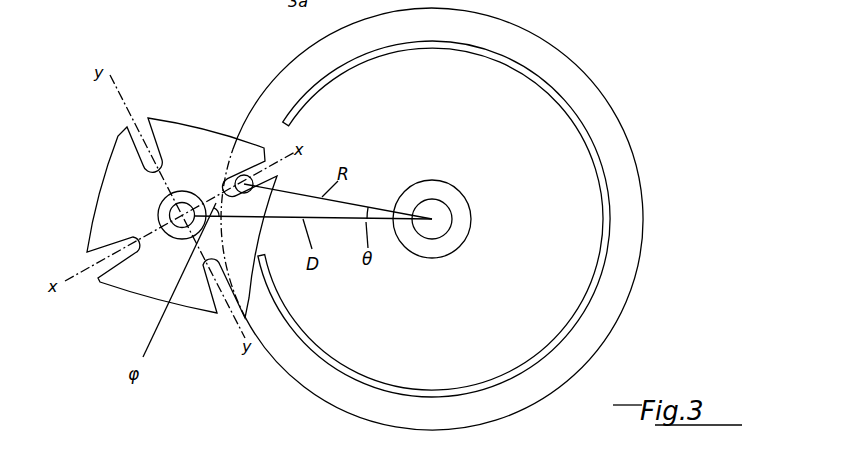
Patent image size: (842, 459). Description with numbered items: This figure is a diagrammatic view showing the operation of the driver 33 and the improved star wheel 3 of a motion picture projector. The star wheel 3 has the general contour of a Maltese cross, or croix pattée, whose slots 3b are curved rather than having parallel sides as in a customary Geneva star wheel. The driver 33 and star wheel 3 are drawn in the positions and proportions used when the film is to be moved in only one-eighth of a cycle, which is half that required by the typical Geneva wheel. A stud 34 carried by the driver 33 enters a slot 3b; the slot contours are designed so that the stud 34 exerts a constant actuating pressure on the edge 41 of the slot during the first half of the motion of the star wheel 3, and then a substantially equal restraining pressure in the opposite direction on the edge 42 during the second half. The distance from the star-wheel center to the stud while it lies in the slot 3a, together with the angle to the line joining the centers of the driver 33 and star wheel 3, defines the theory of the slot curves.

The star wheel 3 is at (146, 270).
The slot 3a is at (434, 219).
The slots 3b is at (133, 152).
The driver 33 is at (432, 219).
The stud 34 is at (253, 180).
The edge of the slot 41 is at (250, 193).
The edge of the slot 42 is at (239, 176).